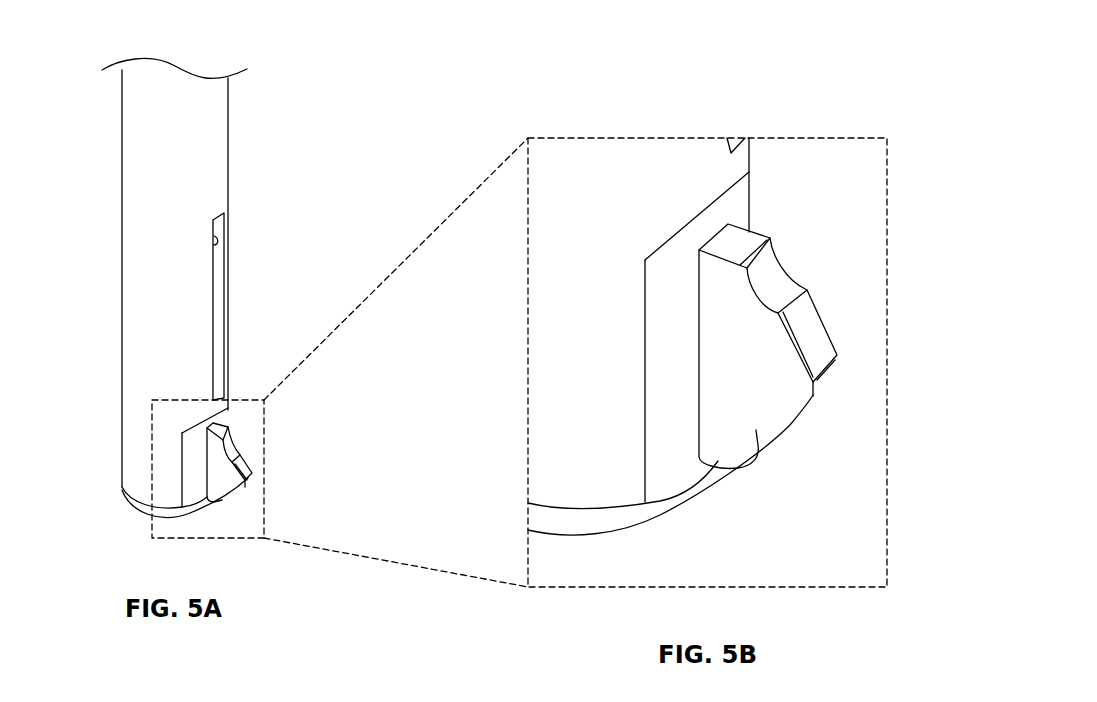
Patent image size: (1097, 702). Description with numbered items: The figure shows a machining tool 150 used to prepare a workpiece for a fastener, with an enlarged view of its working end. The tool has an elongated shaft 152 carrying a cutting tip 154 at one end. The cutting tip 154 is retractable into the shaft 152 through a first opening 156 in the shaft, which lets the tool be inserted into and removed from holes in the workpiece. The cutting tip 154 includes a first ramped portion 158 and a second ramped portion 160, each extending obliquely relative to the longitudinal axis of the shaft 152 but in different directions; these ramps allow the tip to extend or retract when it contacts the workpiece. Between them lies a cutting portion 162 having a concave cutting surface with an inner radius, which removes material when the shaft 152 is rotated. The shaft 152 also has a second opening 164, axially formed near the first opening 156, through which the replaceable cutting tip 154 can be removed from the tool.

In FIG. 5A, the machining tool 150 is at (316, 52).
In FIG. 5A, the shaft 152 is at (135, 244).
In FIG. 5B, the shaft 152 is at (537, 332).
In FIG. 5A, the cutting tip 154 is at (248, 468).
In FIG. 5B, the cutting tip 154 is at (760, 456).
In FIG. 5B, the first opening 156 is at (722, 232).
In FIG. 5B, the first ramped portion 158 is at (815, 396).
In FIG. 5B, the second ramped portion 160 is at (823, 331).
In FIG. 5B, the cutting portion 162 is at (790, 264).
In FIG. 5A, the second opening 164 is at (229, 300).